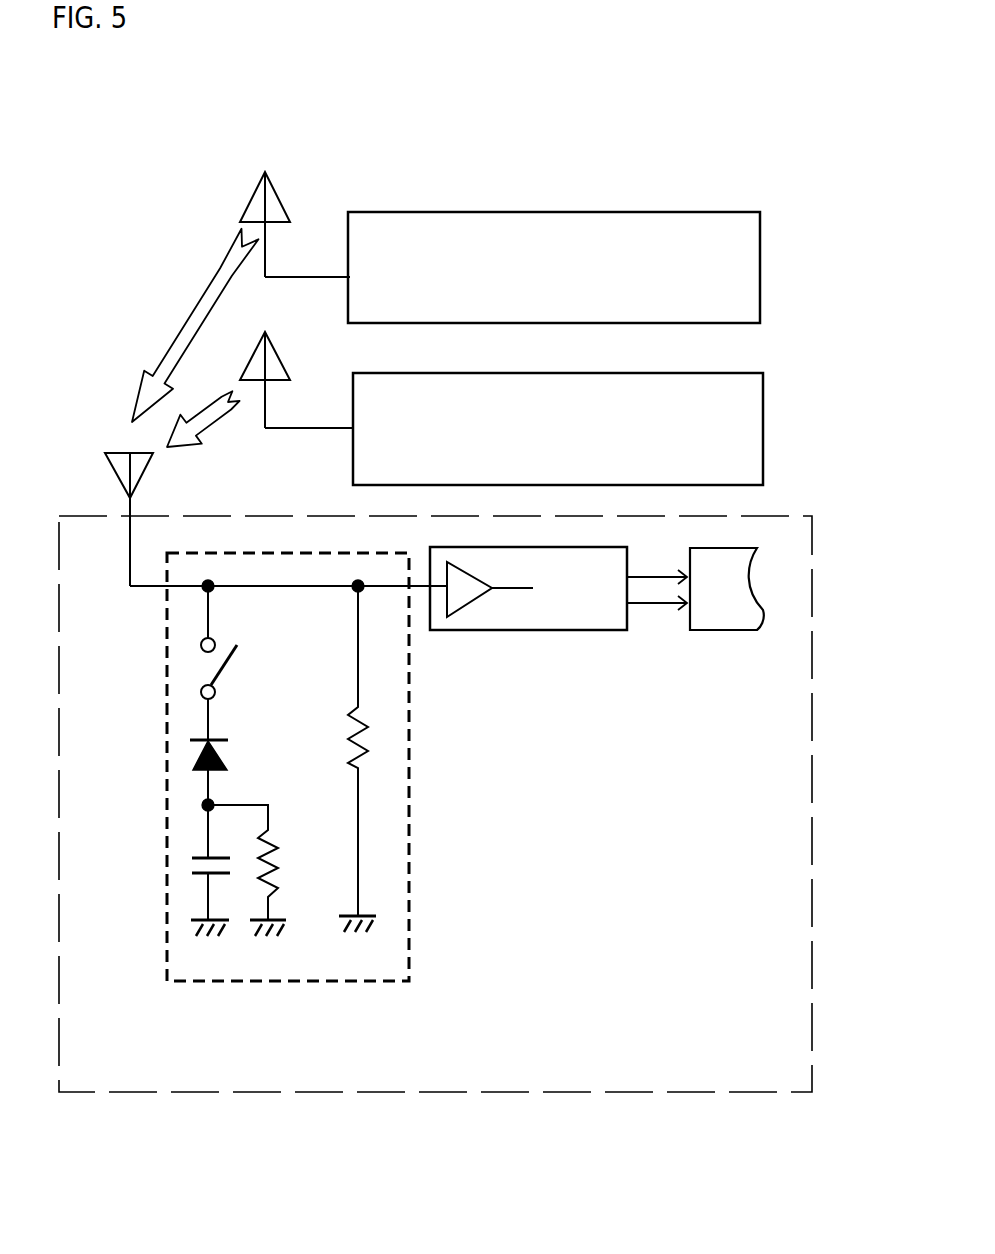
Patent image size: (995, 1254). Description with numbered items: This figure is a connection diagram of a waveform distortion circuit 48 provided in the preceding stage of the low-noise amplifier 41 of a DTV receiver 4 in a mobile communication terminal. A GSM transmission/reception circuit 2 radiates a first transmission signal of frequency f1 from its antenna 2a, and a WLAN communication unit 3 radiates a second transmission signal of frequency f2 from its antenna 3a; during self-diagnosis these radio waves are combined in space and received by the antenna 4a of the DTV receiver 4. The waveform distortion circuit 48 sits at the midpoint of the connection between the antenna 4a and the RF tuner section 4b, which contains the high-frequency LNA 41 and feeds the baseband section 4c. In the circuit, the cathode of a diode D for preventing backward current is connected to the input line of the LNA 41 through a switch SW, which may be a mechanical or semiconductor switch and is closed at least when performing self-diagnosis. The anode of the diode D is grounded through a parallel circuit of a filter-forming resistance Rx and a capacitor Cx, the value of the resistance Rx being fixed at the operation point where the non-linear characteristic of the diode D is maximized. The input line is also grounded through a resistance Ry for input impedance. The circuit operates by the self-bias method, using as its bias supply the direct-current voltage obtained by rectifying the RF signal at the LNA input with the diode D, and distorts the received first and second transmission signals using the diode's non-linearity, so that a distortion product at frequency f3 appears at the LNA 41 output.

The GSM transmission/reception circuit 2 is at (442, 211).
The antenna 2a is at (268, 182).
The WLAN communication unit 3 is at (480, 375).
The antenna 3a is at (268, 342).
The DTV receiver 4 is at (208, 1092).
The antenna 4a is at (108, 460).
The RF tuner section 4b is at (468, 546).
The baseband section 4c is at (707, 547).
The low-noise amplifier 41 is at (472, 600).
The waveform distortion circuit 48 is at (412, 740).
The switch SW is at (203, 667).
The diode D is at (190, 750).
The capacitor Cx is at (192, 867).
The resistance Rx is at (253, 882).
The resistance Ry is at (368, 764).
The frequency f1 is at (195, 325).
The frequency f2 is at (203, 425).
The DTV frequency signal f3 is at (510, 575).